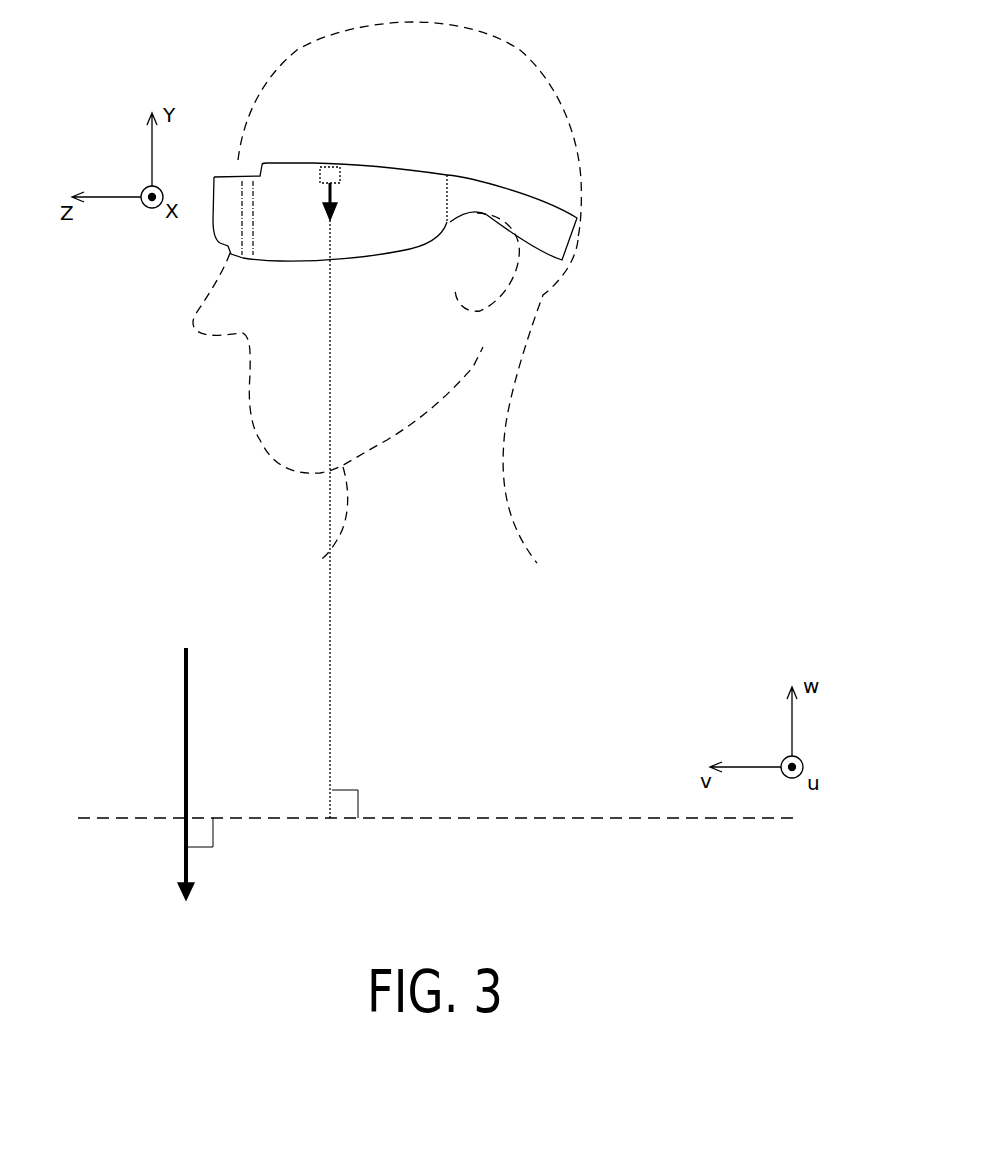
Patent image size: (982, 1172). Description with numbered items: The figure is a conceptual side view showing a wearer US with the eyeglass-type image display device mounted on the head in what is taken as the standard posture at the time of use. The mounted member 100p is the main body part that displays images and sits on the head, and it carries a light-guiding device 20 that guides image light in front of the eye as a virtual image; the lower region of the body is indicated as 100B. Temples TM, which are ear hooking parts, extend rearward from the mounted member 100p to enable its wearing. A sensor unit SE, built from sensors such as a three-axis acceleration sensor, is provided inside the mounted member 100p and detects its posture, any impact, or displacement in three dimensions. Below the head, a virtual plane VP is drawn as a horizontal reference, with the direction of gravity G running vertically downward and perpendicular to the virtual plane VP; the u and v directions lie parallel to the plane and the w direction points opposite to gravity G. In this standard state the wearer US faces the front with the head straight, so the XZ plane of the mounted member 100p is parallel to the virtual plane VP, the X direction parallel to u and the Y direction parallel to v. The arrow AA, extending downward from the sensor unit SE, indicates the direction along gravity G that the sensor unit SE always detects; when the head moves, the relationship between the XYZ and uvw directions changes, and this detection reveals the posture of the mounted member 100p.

The observer or wearer US is at (542, 403).
The light-guiding device 20 is at (227, 223).
The mounted member 100p is at (377, 183).
The head-mounted display main body 100B is at (292, 281).
The temple TM is at (502, 197).
The sensor unit SE is at (327, 167).
The arrow AA is at (335, 201).
The direction of gravity G is at (182, 765).
The virtual plane VP is at (510, 818).